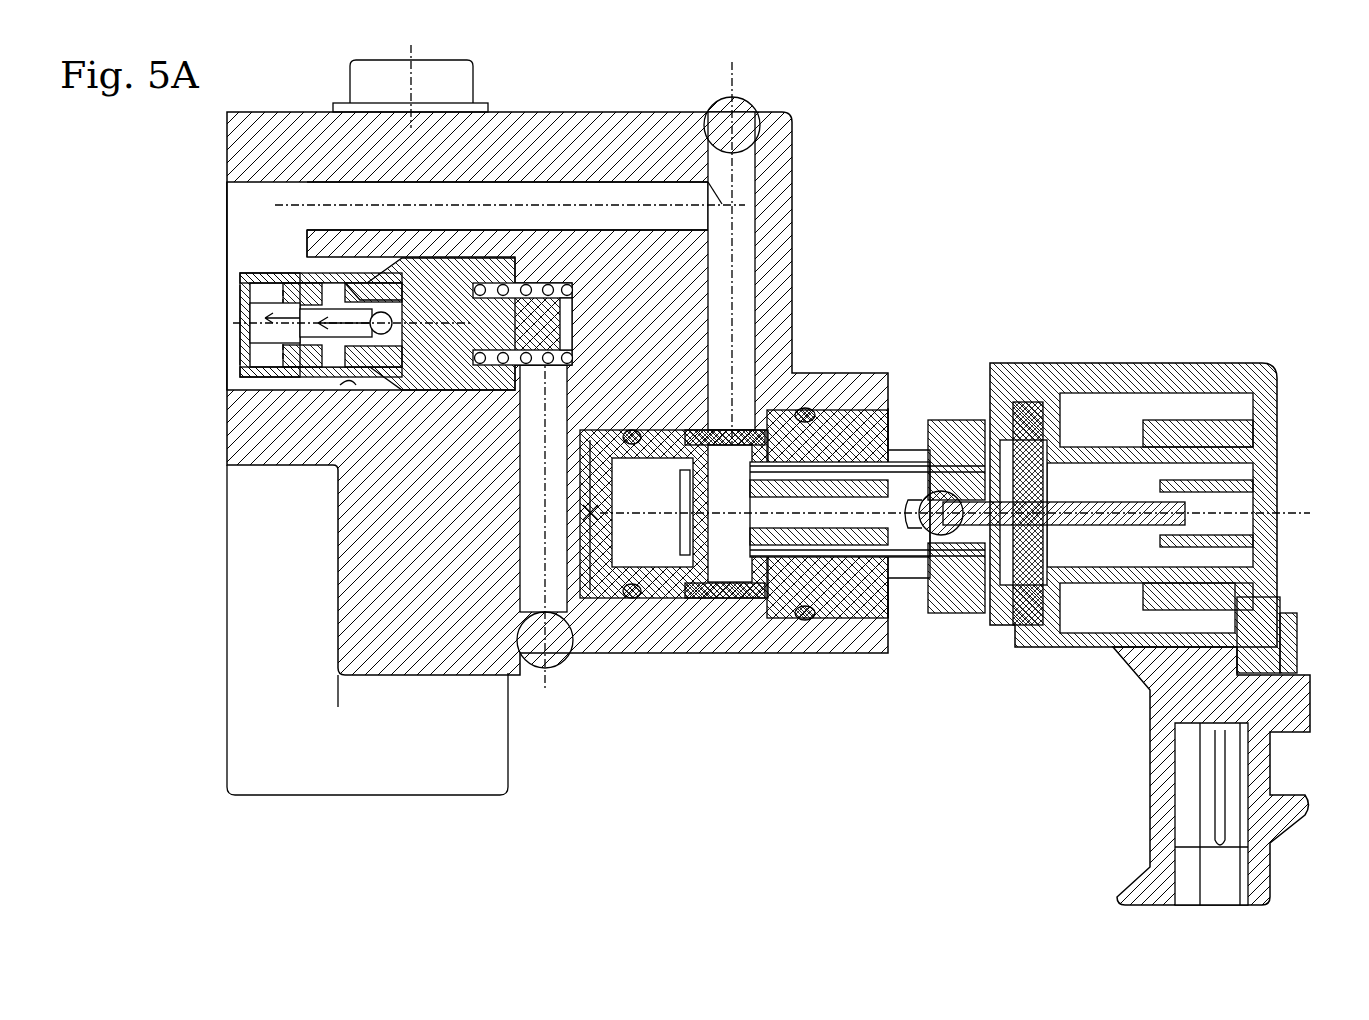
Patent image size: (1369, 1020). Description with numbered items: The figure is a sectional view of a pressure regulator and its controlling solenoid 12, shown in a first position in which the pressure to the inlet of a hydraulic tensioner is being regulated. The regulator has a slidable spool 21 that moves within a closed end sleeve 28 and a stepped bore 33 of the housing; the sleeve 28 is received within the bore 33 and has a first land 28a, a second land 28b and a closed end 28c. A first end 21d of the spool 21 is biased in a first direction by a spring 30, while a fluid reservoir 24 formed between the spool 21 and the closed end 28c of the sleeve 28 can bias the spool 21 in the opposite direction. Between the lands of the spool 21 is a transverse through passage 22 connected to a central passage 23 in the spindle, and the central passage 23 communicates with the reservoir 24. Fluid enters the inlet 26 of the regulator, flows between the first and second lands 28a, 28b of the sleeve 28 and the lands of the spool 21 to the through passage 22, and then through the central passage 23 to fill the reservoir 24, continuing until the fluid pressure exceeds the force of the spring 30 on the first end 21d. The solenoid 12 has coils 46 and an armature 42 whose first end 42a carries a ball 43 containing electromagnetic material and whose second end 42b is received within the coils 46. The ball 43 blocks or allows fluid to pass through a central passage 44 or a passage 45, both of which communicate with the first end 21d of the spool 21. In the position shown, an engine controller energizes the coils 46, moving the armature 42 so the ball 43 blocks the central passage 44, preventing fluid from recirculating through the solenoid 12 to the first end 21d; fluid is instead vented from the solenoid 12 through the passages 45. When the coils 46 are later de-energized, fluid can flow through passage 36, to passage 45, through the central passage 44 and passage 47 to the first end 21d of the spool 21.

The solenoid 12 is at (1127, 268).
The spool 21 is at (460, 335).
The first end of the spool 21d is at (576, 322).
The transverse through passage 22 is at (348, 352).
The central passage 23 is at (335, 342).
The fluid reservoir 24 is at (272, 335).
The inlet of the pressure regulator 26 is at (245, 267).
The closed end sleeve 28 is at (290, 277).
The first land of the sleeve 28a is at (408, 256).
The second land of the sleeve 28b is at (308, 258).
The closed end of the sleeve 28c is at (240, 307).
The spring 30 is at (420, 482).
The stepped bore 33 is at (348, 385).
The passage 36 is at (533, 190).
The armature 42 is at (1030, 405).
The first end of the armature 42a is at (914, 515).
The second end of the armature 42b is at (1187, 513).
The ball 43 is at (940, 492).
The central passage 44 is at (802, 507).
The passage 45 is at (872, 550).
The coils 46 is at (1180, 375).
The passage 47 is at (553, 557).